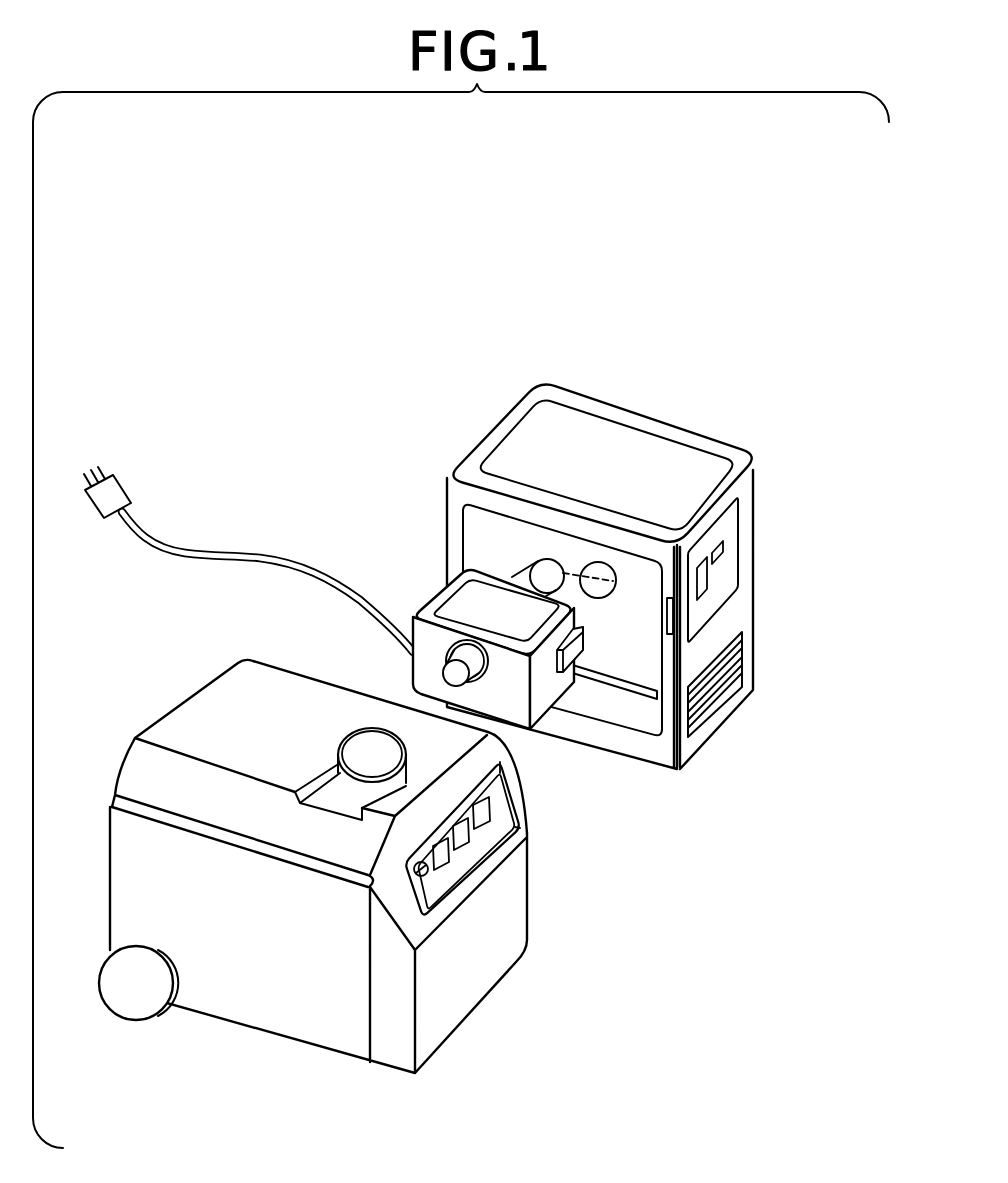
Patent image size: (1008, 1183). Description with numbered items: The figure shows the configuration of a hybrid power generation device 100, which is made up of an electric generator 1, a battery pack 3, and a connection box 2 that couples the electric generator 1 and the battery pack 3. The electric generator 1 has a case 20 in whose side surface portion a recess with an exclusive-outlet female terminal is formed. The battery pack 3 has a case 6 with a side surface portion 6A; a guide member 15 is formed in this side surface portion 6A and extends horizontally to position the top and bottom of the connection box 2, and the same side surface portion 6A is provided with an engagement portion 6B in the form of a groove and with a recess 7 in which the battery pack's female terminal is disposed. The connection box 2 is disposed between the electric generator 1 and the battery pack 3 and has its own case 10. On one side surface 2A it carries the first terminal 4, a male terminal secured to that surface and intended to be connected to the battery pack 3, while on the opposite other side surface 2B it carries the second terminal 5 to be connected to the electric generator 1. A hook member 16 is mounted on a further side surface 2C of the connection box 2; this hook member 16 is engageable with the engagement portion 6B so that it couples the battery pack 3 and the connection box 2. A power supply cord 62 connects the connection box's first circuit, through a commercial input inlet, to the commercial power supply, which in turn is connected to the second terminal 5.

The hybrid power generation device 100 is at (605, 222).
The electric generator 1 is at (350, 875).
The case 20 is at (468, 975).
The connection box 2 is at (495, 667).
The one side surface 2A is at (485, 570).
The other side surface 2B is at (512, 708).
The other side surface 2C is at (536, 710).
The battery pack 3 is at (722, 448).
The first terminal 4 is at (541, 568).
The second terminal 5 is at (450, 678).
The case 6 is at (755, 507).
The side surface portion 6A is at (645, 638).
The engagement portion 6B is at (673, 625).
The recess 7 is at (600, 578).
The case 10 is at (249, 559).
The guide member 15 is at (638, 700).
The hook member 16 is at (577, 665).
The power supply cord 62 is at (242, 548).